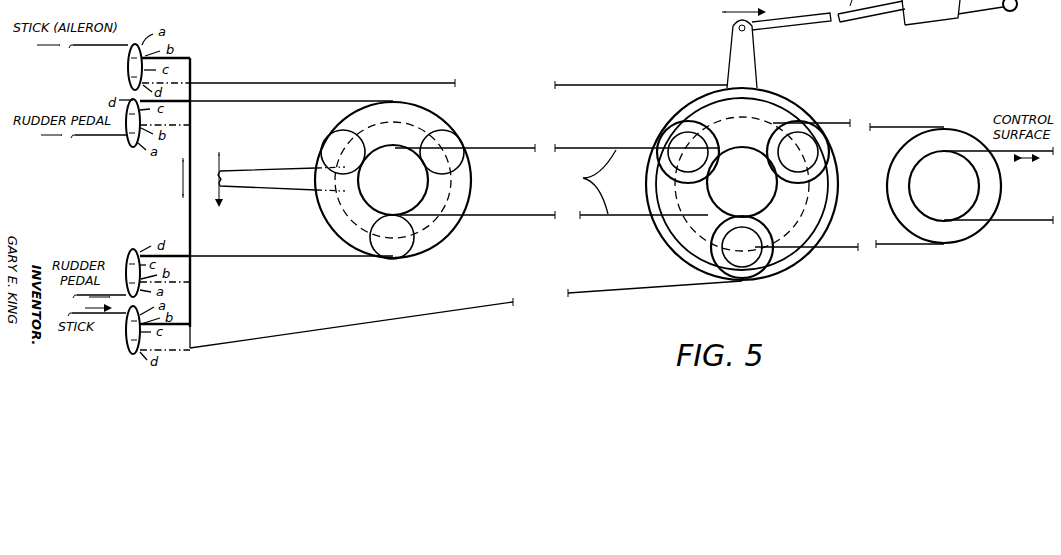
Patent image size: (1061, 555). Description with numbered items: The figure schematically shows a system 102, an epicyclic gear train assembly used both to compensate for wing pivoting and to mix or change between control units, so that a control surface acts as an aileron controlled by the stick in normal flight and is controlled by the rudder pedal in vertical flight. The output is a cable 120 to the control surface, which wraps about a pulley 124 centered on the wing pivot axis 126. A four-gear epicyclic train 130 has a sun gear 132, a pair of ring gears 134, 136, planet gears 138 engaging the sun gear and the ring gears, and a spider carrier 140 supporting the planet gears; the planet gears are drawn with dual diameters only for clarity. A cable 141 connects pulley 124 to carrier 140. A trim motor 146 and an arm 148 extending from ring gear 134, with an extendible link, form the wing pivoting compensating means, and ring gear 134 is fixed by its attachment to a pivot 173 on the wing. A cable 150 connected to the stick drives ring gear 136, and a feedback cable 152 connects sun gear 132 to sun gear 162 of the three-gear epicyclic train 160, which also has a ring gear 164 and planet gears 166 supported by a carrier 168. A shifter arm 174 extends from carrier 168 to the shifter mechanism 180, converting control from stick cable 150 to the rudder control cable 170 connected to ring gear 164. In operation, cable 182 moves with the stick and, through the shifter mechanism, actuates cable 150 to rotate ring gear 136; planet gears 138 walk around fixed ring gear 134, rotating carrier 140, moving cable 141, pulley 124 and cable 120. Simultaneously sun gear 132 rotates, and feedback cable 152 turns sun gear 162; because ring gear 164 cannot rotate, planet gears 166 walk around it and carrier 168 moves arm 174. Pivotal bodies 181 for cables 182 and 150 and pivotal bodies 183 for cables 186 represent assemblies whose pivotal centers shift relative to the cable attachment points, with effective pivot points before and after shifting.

The system 102 is at (542, 313).
The cable 120 is at (966, 203).
The pulley 124 is at (944, 186).
The wing pivot axis 126 is at (947, 188).
The four-gear epicyclic train 130 is at (730, 177).
The sun gear 132 is at (742, 182).
The ring gear 134 is at (780, 97).
The ring gear 136 is at (810, 109).
The planet gears 138 is at (678, 142).
The spider carrier 140 is at (809, 217).
The cable 141 is at (888, 127).
The trim motor 146 is at (877, 15).
The arm 148 is at (757, 63).
The cable 150 is at (318, 83).
The feedback cable 152 is at (636, 181).
The three-gear epicyclic train 160 is at (435, 186).
The sun gear 162 is at (393, 180).
The ring gear 164 is at (450, 125).
The planet gears 166 is at (392, 194).
The carrier 168 is at (474, 186).
The rudder control cable 170 is at (293, 103).
The pivot 173 is at (1017, 6).
The shifter arm 174 is at (281, 179).
The shifter mechanism 180 is at (190, 214).
The pivotal bodies 181 is at (129, 71).
The cable 182 is at (90, 50).
The pivotal bodies 183 is at (133, 150).
The cables 186 is at (103, 138).